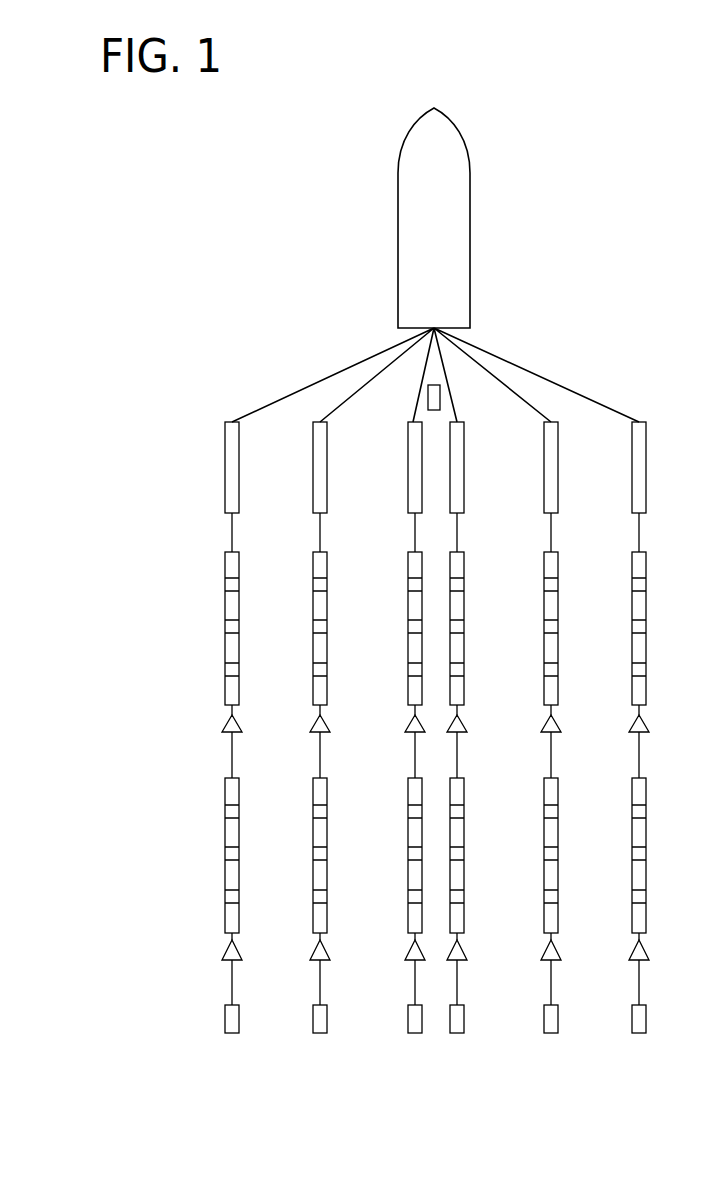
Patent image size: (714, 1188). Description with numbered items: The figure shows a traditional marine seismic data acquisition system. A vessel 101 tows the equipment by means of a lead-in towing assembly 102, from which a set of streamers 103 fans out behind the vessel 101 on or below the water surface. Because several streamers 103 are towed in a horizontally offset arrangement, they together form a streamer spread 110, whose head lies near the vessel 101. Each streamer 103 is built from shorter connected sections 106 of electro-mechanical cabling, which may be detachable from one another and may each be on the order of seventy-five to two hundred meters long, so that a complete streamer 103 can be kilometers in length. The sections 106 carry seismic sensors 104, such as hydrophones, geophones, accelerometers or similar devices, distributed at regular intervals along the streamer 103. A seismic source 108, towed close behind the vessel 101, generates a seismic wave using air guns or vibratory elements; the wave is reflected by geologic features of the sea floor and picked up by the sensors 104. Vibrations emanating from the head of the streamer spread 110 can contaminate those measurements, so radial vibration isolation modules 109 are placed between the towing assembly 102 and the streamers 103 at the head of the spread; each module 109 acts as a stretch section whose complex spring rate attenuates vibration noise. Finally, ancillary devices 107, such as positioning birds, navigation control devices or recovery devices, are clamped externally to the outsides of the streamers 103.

The vessel 101 is at (407, 140).
The lead-in towing assembly 102 is at (421, 385).
The streamer 103 is at (155, 963).
The seismic sensors 104 is at (239, 570).
The section 106 is at (215, 548).
The ancillary device 107 is at (241, 723).
The seismic source 108 is at (440, 407).
The radial vibration isolation module 109 is at (239, 467).
The streamer spread 110 is at (72, 1025).